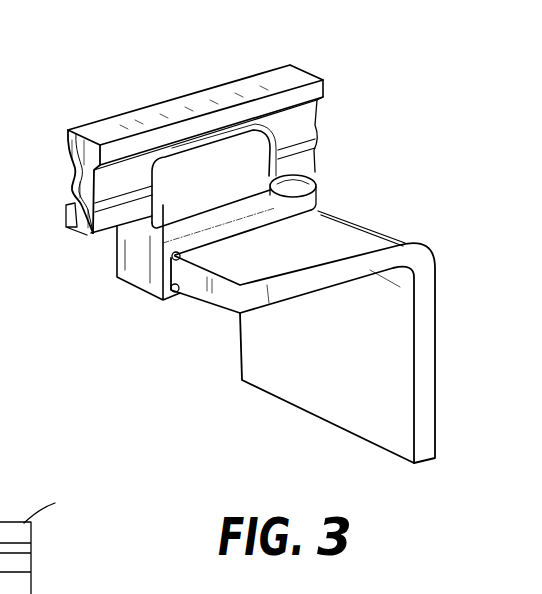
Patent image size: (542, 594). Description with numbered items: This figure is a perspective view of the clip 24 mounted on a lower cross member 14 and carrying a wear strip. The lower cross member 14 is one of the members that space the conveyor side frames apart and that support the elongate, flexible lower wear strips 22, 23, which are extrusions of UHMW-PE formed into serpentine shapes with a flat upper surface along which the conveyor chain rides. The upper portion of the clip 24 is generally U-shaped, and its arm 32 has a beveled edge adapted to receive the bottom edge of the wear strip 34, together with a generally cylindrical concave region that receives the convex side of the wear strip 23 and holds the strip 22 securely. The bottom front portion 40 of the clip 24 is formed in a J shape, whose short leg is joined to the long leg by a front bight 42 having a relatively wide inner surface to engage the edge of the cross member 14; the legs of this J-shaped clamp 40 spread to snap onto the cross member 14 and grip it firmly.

The lower cross member 14 is at (427, 292).
The lower wear strip 22 is at (293, 70).
The lower wear strip 23 is at (68, 184).
The clip 24 is at (334, 170).
The arm 32 is at (232, 163).
The bottom edge of the wear strip 34 is at (85, 224).
The bottom front portion 40 is at (180, 311).
The front bight 42 is at (153, 278).